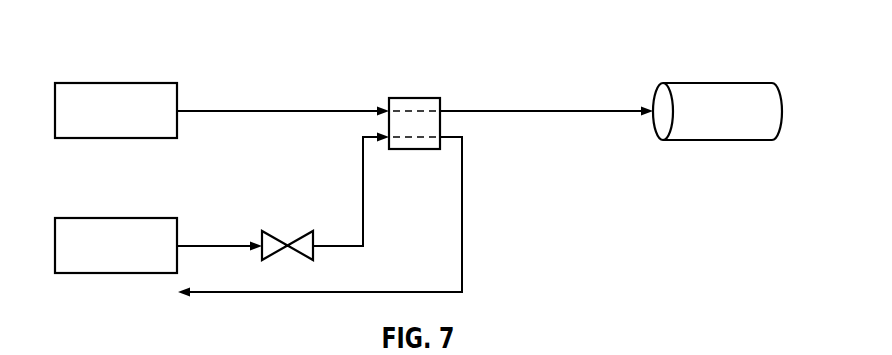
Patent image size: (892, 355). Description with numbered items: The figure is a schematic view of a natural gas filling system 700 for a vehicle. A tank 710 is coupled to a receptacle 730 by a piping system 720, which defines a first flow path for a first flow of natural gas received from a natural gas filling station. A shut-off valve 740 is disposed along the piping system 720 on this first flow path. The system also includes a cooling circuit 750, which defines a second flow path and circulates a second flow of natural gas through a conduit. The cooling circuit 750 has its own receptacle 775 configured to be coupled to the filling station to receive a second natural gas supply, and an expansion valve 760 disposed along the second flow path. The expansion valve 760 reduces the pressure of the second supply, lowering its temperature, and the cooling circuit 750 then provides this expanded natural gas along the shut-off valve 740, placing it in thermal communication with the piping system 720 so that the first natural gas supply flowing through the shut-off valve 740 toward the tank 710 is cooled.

The natural gas filling system 700 is at (755, 30).
The tank 710 is at (700, 125).
The piping system 720 is at (272, 110).
The receptacle 730 is at (96, 122).
The shut-off valve 740 is at (415, 98).
The cooling circuit 750 is at (463, 189).
The expansion valve 760 is at (302, 235).
The receptacle 775 is at (96, 257).